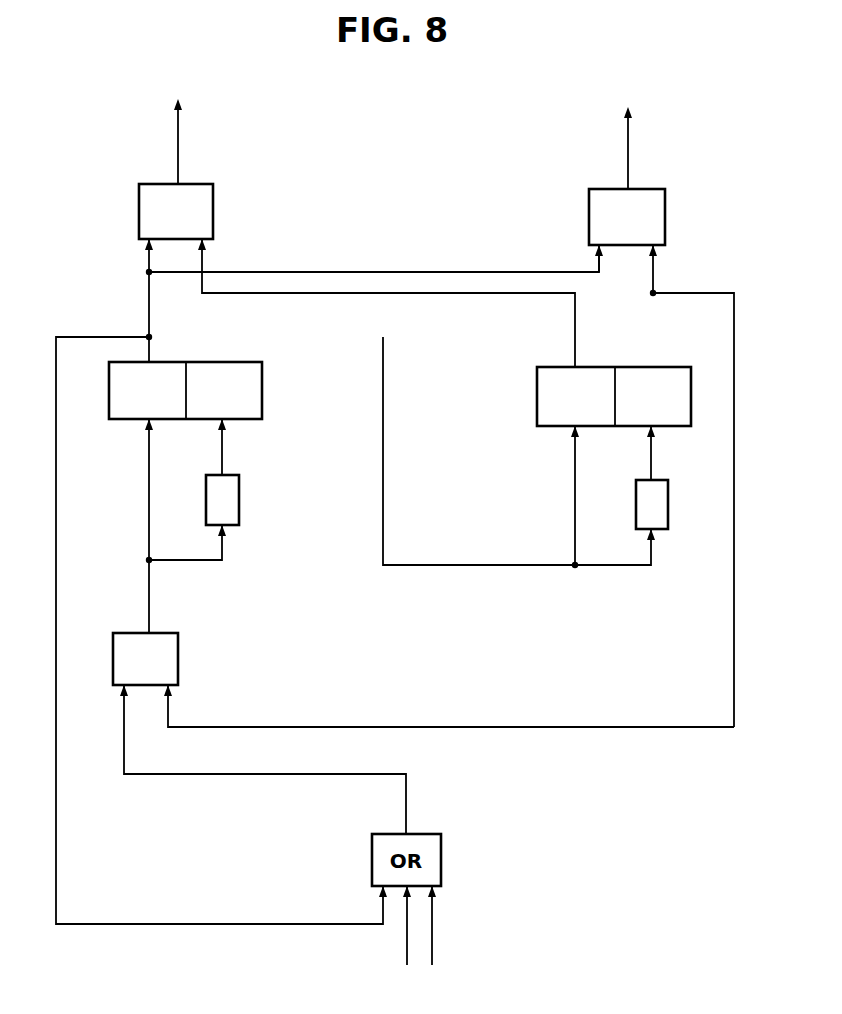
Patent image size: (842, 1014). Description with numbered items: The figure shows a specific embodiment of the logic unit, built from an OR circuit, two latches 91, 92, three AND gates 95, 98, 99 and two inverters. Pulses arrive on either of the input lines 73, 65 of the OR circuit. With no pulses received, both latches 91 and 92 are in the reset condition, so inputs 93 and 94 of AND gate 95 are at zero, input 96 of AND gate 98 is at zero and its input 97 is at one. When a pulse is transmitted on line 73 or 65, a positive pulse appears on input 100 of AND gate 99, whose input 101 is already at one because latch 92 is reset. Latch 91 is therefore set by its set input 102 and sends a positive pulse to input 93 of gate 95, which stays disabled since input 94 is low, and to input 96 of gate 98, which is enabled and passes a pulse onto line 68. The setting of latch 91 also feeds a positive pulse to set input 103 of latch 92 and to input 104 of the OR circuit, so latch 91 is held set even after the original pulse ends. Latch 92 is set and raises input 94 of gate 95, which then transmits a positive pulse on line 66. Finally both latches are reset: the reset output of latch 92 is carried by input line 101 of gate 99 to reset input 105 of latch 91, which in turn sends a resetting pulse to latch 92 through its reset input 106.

The input line 65 is at (434, 946).
The output line of AND gate 95 66 is at (181, 137).
The output line of AND gate 98 68 is at (629, 142).
The input line 73 is at (403, 950).
The latch 91 is at (262, 389).
The latch 92 is at (537, 378).
The input of AND gate 95 93 is at (146, 263).
The input of AND gate 95 94 is at (205, 263).
The AND gate 95 is at (213, 199).
The input of AND gate 98 96 is at (597, 263).
The input of AND gate 98 97 is at (656, 272).
The AND gate 98 is at (665, 208).
The AND gate 99 is at (178, 660).
The input of AND gate 99 100 is at (258, 773).
The input line of AND gate 99 101 is at (418, 725).
The set input of latch 91 102 is at (147, 483).
The set input of latch 92 103 is at (573, 483).
The input of OR circuit 104 is at (160, 924).
The reset input of latch 91 105 is at (185, 562).
The reset input of latch 92 106 is at (600, 567).